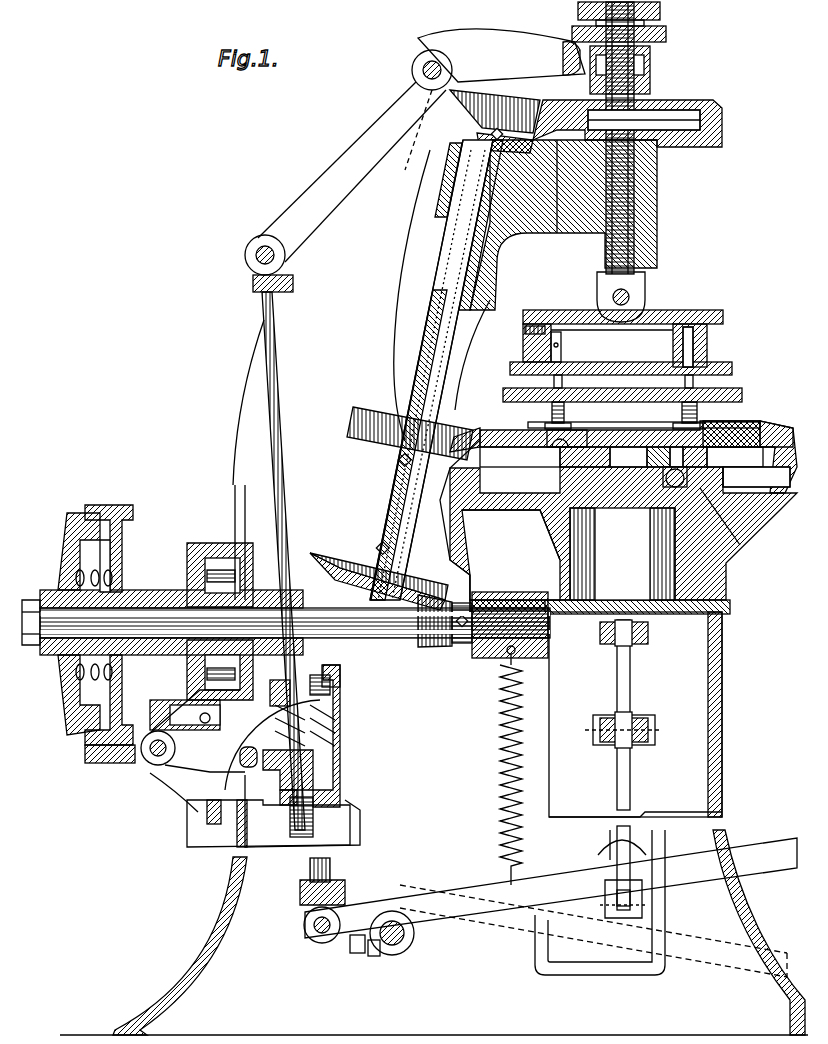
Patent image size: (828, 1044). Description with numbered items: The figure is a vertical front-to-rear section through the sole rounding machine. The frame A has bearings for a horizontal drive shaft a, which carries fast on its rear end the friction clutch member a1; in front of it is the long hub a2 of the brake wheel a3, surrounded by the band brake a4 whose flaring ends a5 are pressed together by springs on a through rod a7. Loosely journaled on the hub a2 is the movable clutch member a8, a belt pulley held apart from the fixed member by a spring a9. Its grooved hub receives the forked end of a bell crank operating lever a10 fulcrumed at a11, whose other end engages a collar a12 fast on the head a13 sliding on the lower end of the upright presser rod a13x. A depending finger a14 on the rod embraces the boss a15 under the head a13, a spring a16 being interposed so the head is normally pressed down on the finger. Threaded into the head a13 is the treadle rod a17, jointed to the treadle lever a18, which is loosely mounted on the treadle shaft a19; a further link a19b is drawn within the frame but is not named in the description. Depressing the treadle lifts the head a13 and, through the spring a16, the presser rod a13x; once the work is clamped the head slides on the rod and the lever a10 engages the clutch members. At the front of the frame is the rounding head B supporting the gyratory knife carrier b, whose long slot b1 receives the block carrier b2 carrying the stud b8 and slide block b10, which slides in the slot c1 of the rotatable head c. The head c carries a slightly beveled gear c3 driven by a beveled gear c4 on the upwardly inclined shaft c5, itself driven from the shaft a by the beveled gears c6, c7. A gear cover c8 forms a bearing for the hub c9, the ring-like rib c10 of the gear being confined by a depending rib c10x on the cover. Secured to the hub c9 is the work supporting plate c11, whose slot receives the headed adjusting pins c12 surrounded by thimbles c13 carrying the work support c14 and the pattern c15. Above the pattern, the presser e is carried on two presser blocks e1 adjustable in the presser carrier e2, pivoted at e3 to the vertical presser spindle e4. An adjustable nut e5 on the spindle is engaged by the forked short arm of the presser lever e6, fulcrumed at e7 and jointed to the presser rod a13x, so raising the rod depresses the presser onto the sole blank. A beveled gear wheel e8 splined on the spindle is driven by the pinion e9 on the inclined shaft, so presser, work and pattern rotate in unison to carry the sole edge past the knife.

The vertical presser spindle e4 is at (632, 115).
The adjustable nut e5 is at (650, 72).
The beveled gear wheel e8 is at (712, 112).
The presser carrier e2 is at (660, 318).
The pivot connection e3 is at (630, 297).
The presser lever e6 is at (440, 54).
The fulcrum e7 is at (413, 68).
The beveled pinion e9 is at (468, 122).
The upwardly inclined shaft c5 is at (452, 262).
The beveled gear c4 is at (352, 418).
The beveled gear c6 is at (322, 562).
The beveled gear c7 is at (430, 650).
The presser e is at (621, 357).
The presser blocks e1 is at (708, 347).
The slot of rotatable head c1 is at (525, 332).
The pattern c15 is at (510, 386).
The gear wheel hub c9 is at (722, 388).
The thimbles c13 is at (685, 402).
The work support c14 is at (703, 425).
The ring-like rib c10 is at (745, 425).
The depending rib c10x is at (572, 440).
The gear cover c8 is at (770, 426).
The rotatable head c is at (757, 432).
The gear c3 is at (788, 438).
The work supporting plate c11 is at (500, 430).
The headed adjusting pins c12 is at (540, 458).
The slide block b10 is at (640, 462).
The stud b8 is at (735, 458).
The block carrier b2 is at (700, 482).
The rounding head B is at (726, 565).
The long slot b1 is at (622, 554).
The knife carrier b is at (745, 535).
The frame A is at (715, 662).
The horizontal drive shaft a is at (395, 640).
The long hub a2 is at (128, 598).
The movable clutch member a8 is at (135, 512).
The friction clutch member a1 is at (62, 700).
The spring a9 is at (105, 700).
The brake wheel a3 is at (205, 545).
The band brake a4 is at (245, 545).
The flaring ends a5 is at (210, 705).
The through rod a7 is at (185, 715).
The fulcrum a11 is at (148, 760).
The bell crank operating lever a10 is at (205, 740).
The spring a16 is at (290, 720).
The presser rod a13x is at (280, 380).
The depending finger a14 is at (340, 712).
The collar a12 is at (343, 745).
The head a13 is at (275, 805).
The boss a15 is at (315, 815).
The treadle rod a17 is at (305, 835).
The treadle shaft a19 is at (500, 782).
The link rod a19b is at (622, 769).
The treadle lever a18 is at (482, 915).